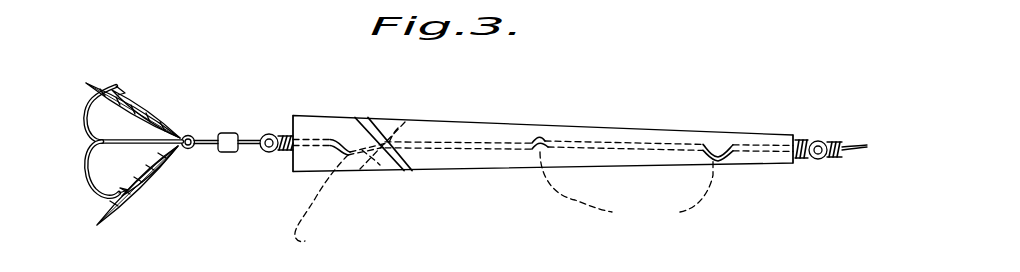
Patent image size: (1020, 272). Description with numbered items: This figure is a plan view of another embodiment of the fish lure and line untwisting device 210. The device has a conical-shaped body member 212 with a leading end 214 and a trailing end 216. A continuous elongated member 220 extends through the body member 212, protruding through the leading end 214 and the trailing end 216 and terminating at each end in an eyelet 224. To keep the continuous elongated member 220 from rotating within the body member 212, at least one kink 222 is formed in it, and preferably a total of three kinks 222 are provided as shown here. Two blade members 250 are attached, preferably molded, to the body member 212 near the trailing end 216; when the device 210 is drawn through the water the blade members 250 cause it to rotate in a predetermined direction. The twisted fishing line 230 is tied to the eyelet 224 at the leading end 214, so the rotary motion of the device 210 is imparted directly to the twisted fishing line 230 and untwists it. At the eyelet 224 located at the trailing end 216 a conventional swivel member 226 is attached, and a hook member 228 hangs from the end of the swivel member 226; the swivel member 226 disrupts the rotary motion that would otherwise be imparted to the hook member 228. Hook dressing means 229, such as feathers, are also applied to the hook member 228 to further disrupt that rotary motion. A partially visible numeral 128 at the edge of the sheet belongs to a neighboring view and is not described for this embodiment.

The reference numeral (adjacent figure) 128 is at (86, 3).
The fish lure and line untwisting device 210 is at (722, 125).
The body member 212 is at (462, 120).
The leading end 214 is at (797, 135).
The trailing end 216 is at (287, 114).
The continuous elongated member 220 is at (626, 140).
The kink 222 is at (504, 205).
The eyelet 224 is at (270, 153).
The swivel member 226 is at (230, 133).
The hook member 228 is at (93, 182).
The hook dressing means 229 is at (158, 112).
The twisted fishing line 230 is at (862, 149).
The blade member 250 is at (377, 120).